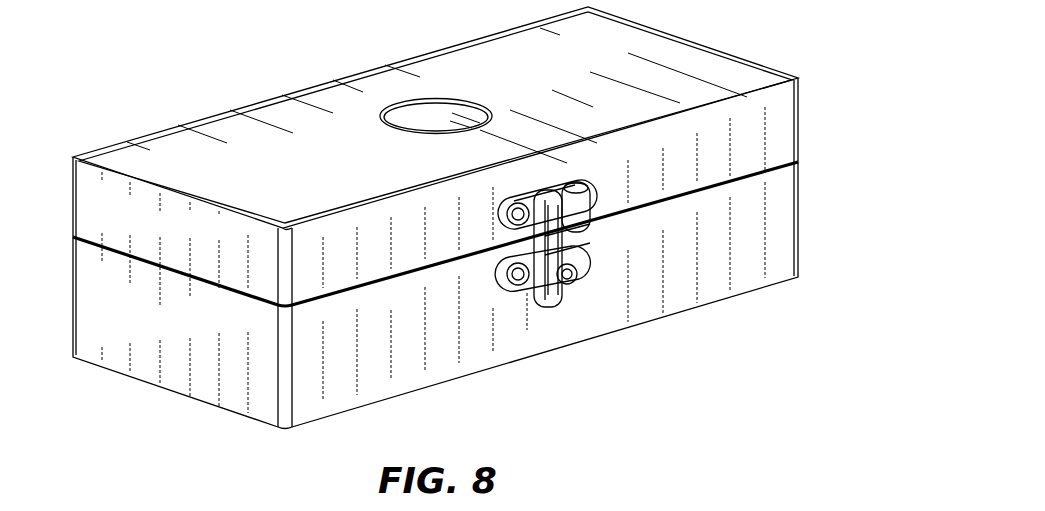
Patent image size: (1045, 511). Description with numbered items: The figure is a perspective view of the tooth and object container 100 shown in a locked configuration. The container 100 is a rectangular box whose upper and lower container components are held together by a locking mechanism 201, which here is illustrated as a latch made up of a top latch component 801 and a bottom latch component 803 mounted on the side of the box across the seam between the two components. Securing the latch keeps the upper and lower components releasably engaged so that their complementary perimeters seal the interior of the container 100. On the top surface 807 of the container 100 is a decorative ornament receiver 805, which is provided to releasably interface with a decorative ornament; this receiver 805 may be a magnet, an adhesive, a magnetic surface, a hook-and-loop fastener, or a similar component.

The tooth and object container 100 is at (435, 218).
The locking mechanism 201 is at (497, 270).
The top latch component 801 is at (582, 175).
The bottom latch component 803 is at (595, 243).
The decorative ornament receiver 805 is at (463, 100).
The top surface 807 is at (522, 30).